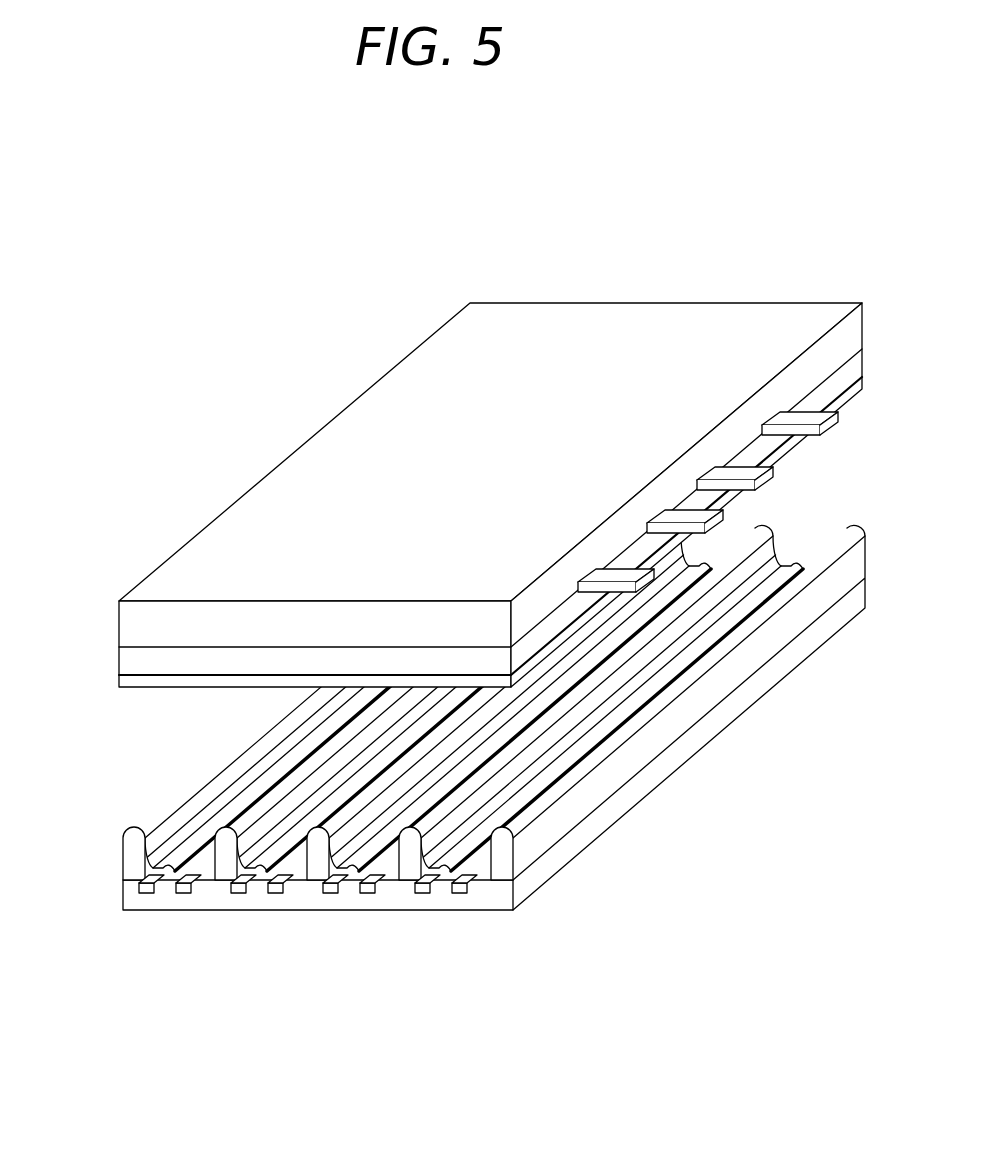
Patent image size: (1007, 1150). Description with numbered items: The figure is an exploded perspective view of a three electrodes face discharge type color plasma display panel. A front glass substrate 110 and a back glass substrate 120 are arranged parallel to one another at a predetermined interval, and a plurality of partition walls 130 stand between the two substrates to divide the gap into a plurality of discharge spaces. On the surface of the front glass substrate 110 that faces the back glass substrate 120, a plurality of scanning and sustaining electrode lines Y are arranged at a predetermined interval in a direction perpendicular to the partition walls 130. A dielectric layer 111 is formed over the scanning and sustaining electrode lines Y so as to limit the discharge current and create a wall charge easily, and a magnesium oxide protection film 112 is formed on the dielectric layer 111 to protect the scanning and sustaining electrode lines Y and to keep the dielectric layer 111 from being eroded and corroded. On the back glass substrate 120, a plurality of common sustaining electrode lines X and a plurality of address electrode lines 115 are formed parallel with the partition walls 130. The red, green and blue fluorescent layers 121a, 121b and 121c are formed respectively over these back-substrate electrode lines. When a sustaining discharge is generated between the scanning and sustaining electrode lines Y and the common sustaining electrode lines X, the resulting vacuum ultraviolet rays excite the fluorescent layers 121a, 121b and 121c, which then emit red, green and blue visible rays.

The front glass substrate 110 is at (340, 446).
The dielectric layer 111 is at (132, 663).
The magnesium oxide (MgO) protection film 112 is at (124, 677).
The scanning and sustaining electrode lines Y is at (770, 465).
The back glass substrate 120 is at (504, 893).
The address electrode lines 115 is at (140, 890).
The partition walls 130 is at (132, 855).
The R fluorescent layer 121a is at (172, 892).
The common sustaining electrode lines X is at (187, 893).
The G fluorescent layer 121b is at (258, 877).
The B fluorescent layer 121c is at (345, 877).